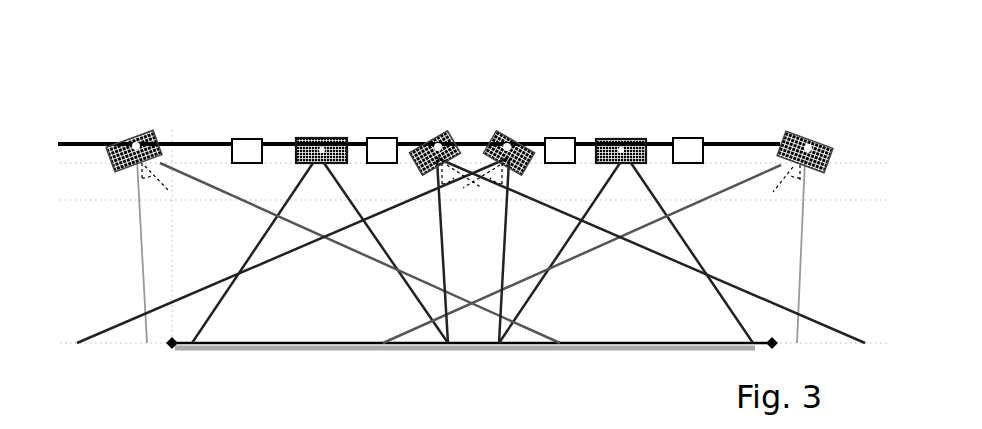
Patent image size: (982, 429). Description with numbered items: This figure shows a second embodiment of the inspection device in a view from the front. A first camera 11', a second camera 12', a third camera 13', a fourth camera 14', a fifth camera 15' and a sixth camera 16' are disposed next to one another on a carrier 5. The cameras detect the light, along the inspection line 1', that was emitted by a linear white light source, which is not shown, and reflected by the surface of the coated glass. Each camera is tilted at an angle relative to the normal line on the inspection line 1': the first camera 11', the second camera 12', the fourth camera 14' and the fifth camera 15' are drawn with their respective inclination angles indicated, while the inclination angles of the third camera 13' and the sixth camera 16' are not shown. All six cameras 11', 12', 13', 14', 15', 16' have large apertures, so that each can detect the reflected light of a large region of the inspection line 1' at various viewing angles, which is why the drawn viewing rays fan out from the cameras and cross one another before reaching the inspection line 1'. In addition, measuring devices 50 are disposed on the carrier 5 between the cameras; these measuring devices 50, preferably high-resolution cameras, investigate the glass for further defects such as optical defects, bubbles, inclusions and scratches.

The carrier 5 is at (97, 143).
The additional measuring devices 50 is at (252, 147).
The first camera 11' is at (637, 208).
The second camera 12' is at (608, 213).
The third camera 13' is at (626, 202).
The fourth camera 14' is at (333, 205).
The fifth camera 15' is at (344, 212).
The sixth camera 16' is at (320, 206).
The inspection line 1' is at (472, 383).